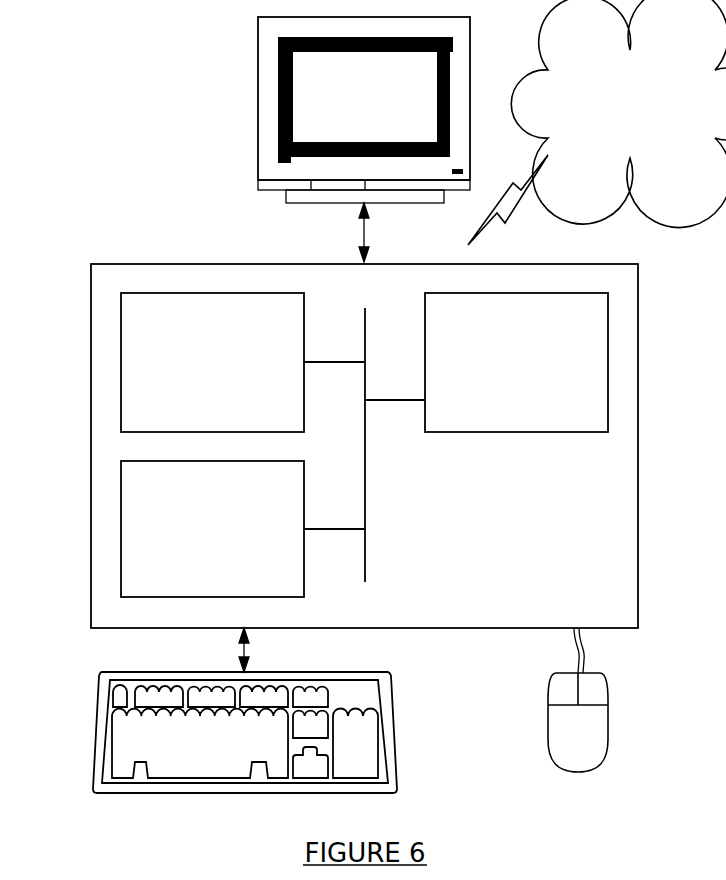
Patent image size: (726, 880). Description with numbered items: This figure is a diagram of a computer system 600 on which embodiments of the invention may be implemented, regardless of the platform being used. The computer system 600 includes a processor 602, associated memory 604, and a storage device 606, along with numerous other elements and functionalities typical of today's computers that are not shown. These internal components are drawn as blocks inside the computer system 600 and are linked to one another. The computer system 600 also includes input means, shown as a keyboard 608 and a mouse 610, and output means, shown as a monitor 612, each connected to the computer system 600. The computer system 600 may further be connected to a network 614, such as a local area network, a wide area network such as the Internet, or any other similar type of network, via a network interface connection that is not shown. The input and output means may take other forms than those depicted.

The computer system 600 is at (653, 322).
The processor 602 is at (501, 372).
The memory 604 is at (196, 372).
The storage device 606 is at (196, 539).
The keyboard 608 is at (184, 755).
The mouse 610 is at (561, 743).
The monitor 612 is at (349, 113).
The network 614 is at (616, 113).